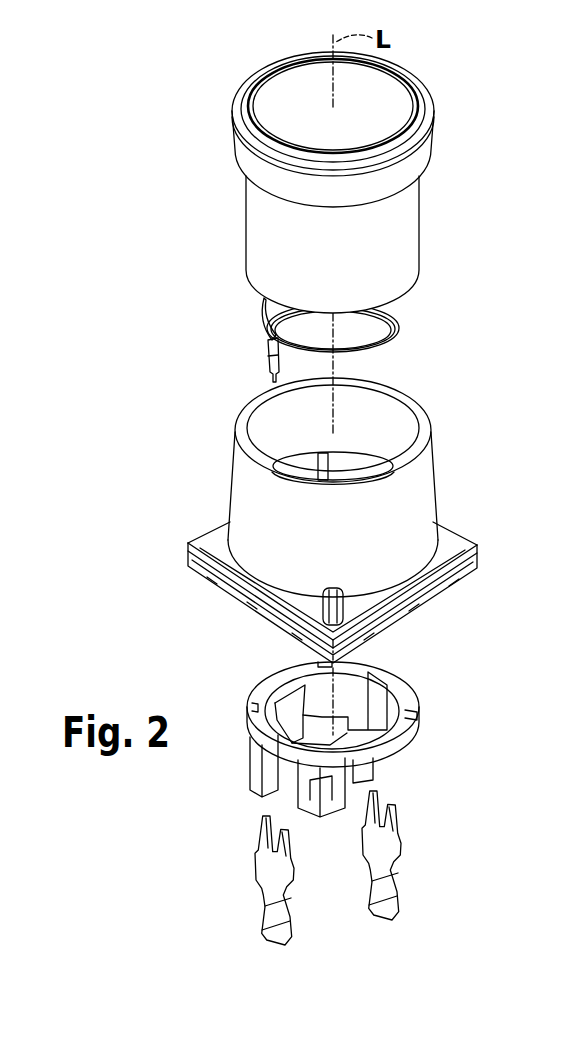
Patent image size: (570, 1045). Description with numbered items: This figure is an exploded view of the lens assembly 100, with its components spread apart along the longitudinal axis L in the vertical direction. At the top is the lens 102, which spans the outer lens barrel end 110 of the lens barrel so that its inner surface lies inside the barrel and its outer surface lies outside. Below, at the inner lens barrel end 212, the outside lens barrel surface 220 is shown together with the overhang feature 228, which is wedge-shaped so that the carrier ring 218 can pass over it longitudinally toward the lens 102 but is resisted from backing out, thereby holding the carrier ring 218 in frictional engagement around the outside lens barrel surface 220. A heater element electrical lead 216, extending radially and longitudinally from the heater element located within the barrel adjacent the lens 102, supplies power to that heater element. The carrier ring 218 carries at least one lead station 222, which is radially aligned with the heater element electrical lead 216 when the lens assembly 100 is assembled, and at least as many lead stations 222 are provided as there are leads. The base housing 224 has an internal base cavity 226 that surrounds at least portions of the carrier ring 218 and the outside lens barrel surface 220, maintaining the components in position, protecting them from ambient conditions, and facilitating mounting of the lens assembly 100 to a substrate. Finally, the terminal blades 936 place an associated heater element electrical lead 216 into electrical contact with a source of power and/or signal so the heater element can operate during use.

The lens assembly 100 is at (472, 253).
The lens 102 is at (375, 110).
The outer lens barrel end 110 is at (248, 68).
The inner lens barrel end 212 is at (262, 315).
The heater element electrical lead 216 is at (262, 360).
The carrier ring 218 is at (428, 720).
The outside lens barrel surface 220 is at (343, 331).
The lead station 222 is at (255, 800).
The base housing 224 is at (218, 598).
The internal base cavity 226 is at (385, 427).
The overhang feature 228 is at (374, 341).
The terminal blade 936 is at (243, 890).